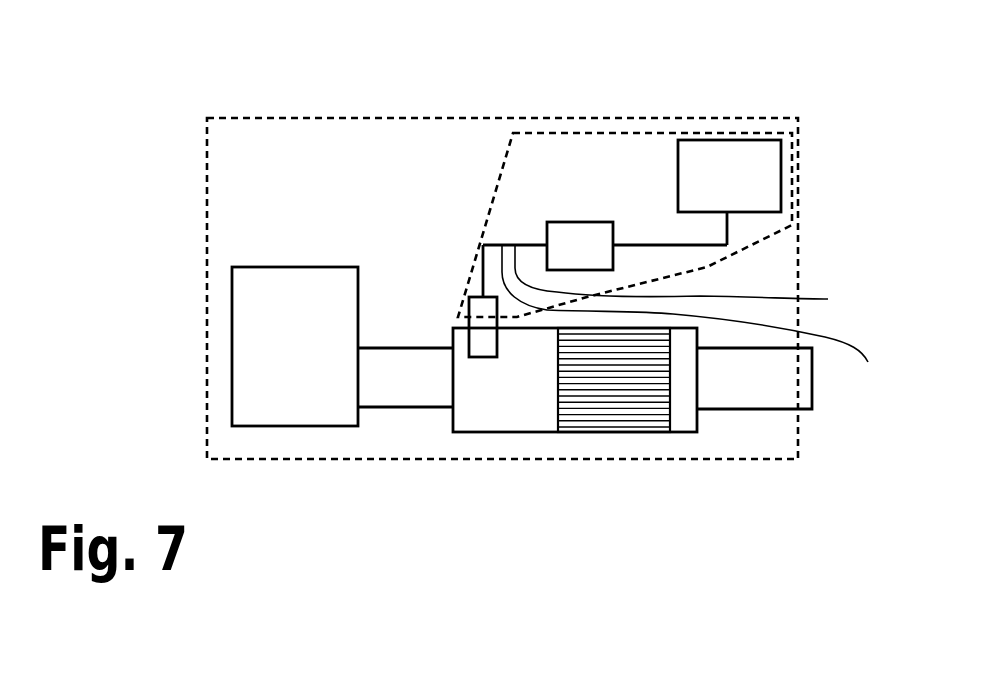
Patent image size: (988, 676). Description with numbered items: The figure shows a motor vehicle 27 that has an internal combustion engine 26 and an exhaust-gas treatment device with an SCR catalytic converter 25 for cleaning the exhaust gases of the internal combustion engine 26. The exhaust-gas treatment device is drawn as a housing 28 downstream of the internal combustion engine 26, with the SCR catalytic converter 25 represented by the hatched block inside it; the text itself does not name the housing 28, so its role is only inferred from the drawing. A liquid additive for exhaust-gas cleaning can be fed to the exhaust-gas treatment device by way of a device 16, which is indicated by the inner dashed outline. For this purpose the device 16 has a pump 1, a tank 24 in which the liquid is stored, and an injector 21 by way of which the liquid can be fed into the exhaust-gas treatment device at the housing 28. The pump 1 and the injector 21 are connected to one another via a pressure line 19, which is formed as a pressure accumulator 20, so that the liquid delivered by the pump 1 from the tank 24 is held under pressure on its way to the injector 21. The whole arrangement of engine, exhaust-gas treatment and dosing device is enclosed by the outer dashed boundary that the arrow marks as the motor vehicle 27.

The motor vehicle 27 is at (192, 80).
The device 16 is at (497, 166).
The internal combustion engine 26 is at (337, 267).
The exhaust gas treatment housing 28 is at (518, 432).
The SCR catalytic converter 25 is at (673, 408).
The injector 21 is at (463, 298).
The pump 1 is at (577, 222).
The tank 24 is at (742, 140).
The pressure line 19 is at (693, 285).
The pressure accumulator 20 is at (699, 325).